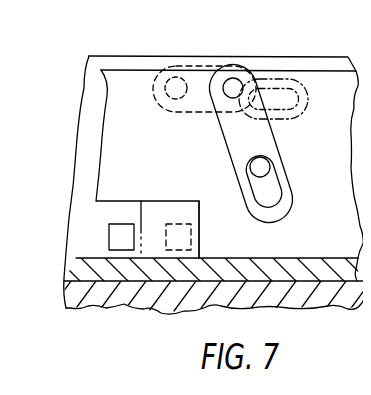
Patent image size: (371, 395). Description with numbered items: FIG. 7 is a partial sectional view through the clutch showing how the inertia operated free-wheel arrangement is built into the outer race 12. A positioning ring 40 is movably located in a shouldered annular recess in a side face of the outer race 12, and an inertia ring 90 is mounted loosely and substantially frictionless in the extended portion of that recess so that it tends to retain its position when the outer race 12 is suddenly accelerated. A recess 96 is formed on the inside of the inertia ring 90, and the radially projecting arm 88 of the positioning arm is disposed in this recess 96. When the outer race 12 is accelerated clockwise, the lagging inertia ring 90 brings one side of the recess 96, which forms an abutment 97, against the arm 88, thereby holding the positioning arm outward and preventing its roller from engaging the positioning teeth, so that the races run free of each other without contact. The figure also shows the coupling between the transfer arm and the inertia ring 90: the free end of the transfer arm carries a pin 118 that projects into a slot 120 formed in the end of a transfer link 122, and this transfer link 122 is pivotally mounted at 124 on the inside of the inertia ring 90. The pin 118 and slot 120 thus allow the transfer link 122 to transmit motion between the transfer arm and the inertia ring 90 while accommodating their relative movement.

The outer race 12 is at (93, 305).
The positioning ring 40 is at (127, 288).
The radially projecting arm 88 is at (175, 227).
The inertia ring 90 is at (330, 84).
The recess 96 is at (116, 208).
The abutment 97 is at (192, 208).
The pin 118 is at (262, 154).
The slot 120 is at (272, 195).
The transfer link 122 is at (282, 134).
The pivotal mounting 124 is at (232, 85).